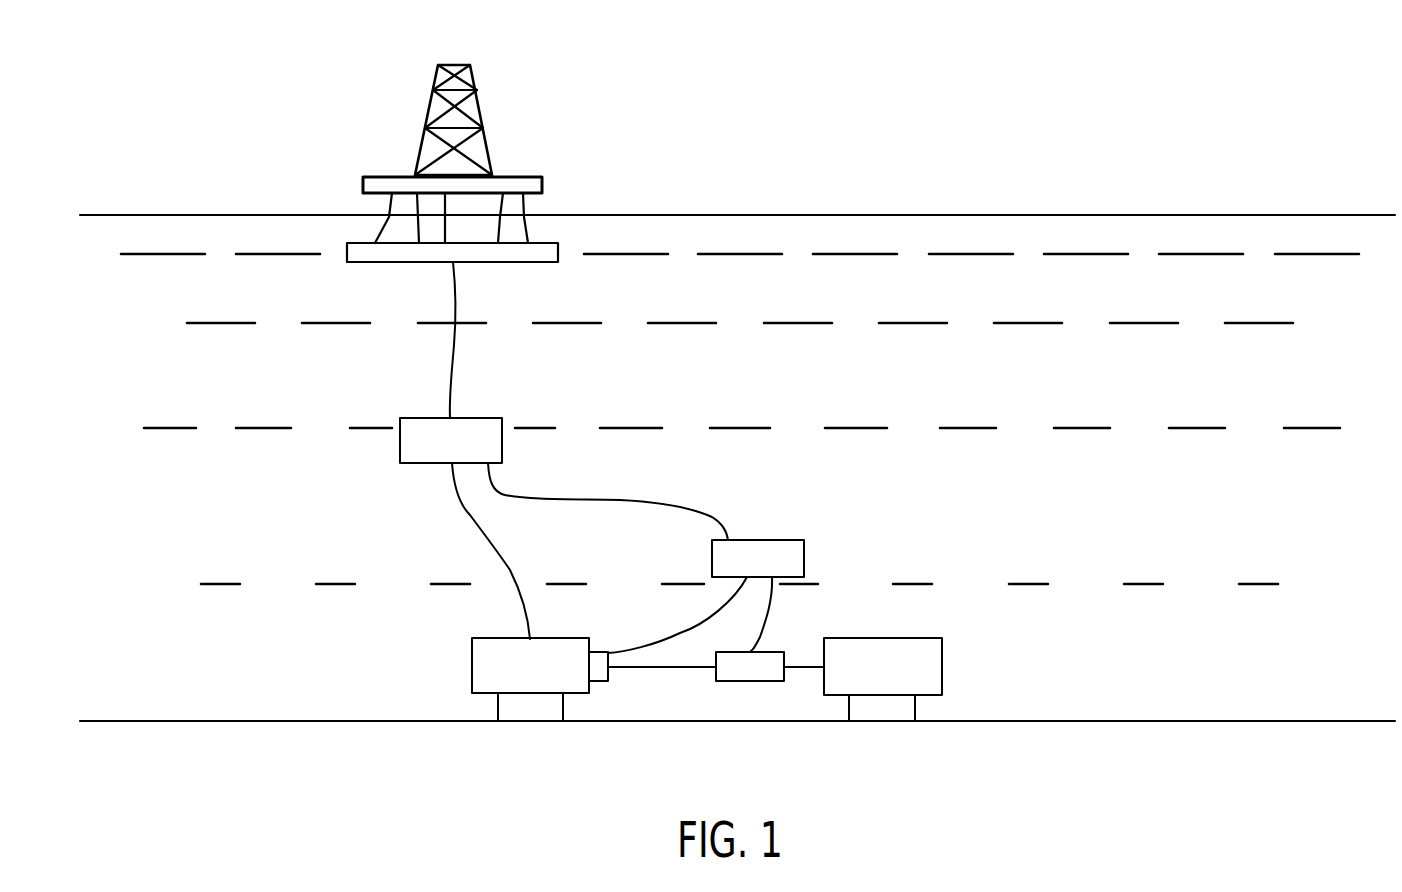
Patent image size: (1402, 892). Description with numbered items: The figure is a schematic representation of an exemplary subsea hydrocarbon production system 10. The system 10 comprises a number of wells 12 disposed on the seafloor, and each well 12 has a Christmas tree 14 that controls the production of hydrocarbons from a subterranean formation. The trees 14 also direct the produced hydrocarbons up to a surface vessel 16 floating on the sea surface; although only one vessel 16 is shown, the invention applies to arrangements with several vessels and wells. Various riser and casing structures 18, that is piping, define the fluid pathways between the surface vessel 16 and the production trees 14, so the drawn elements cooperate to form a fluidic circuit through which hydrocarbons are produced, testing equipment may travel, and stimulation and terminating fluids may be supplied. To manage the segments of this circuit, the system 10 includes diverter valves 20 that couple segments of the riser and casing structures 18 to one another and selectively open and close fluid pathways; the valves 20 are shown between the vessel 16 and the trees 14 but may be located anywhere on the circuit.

The subsea hydrocarbon production system 10 is at (791, 108).
The well 12 is at (528, 708).
The Christmas tree 14 is at (472, 673).
The surface vessel 16 is at (542, 185).
The riser and casing structure 18 is at (450, 393).
The diverter valve 20 is at (400, 440).